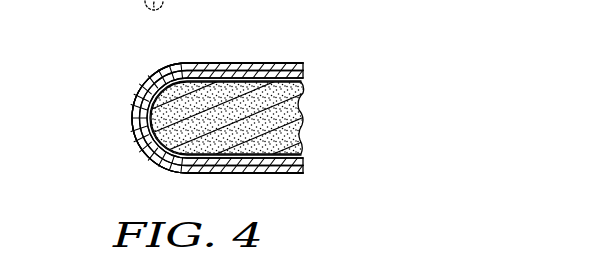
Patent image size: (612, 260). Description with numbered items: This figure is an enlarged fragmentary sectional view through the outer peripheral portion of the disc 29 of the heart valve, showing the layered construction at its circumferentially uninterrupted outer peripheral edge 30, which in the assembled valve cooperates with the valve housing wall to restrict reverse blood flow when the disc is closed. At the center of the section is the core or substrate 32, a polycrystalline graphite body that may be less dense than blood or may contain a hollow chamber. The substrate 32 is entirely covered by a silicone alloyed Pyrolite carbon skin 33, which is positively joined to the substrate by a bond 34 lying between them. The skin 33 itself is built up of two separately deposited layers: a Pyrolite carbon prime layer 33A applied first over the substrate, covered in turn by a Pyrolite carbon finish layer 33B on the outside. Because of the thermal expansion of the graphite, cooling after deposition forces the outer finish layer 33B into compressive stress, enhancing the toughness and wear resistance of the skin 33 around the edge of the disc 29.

The disc 29 is at (204, 56).
The outer peripheral edge 30 is at (133, 113).
The substrate 32 is at (280, 130).
The skin 33 is at (282, 70).
The prime layer 33A is at (303, 73).
The finish layer 33B is at (303, 63).
The bond 34 is at (303, 84).